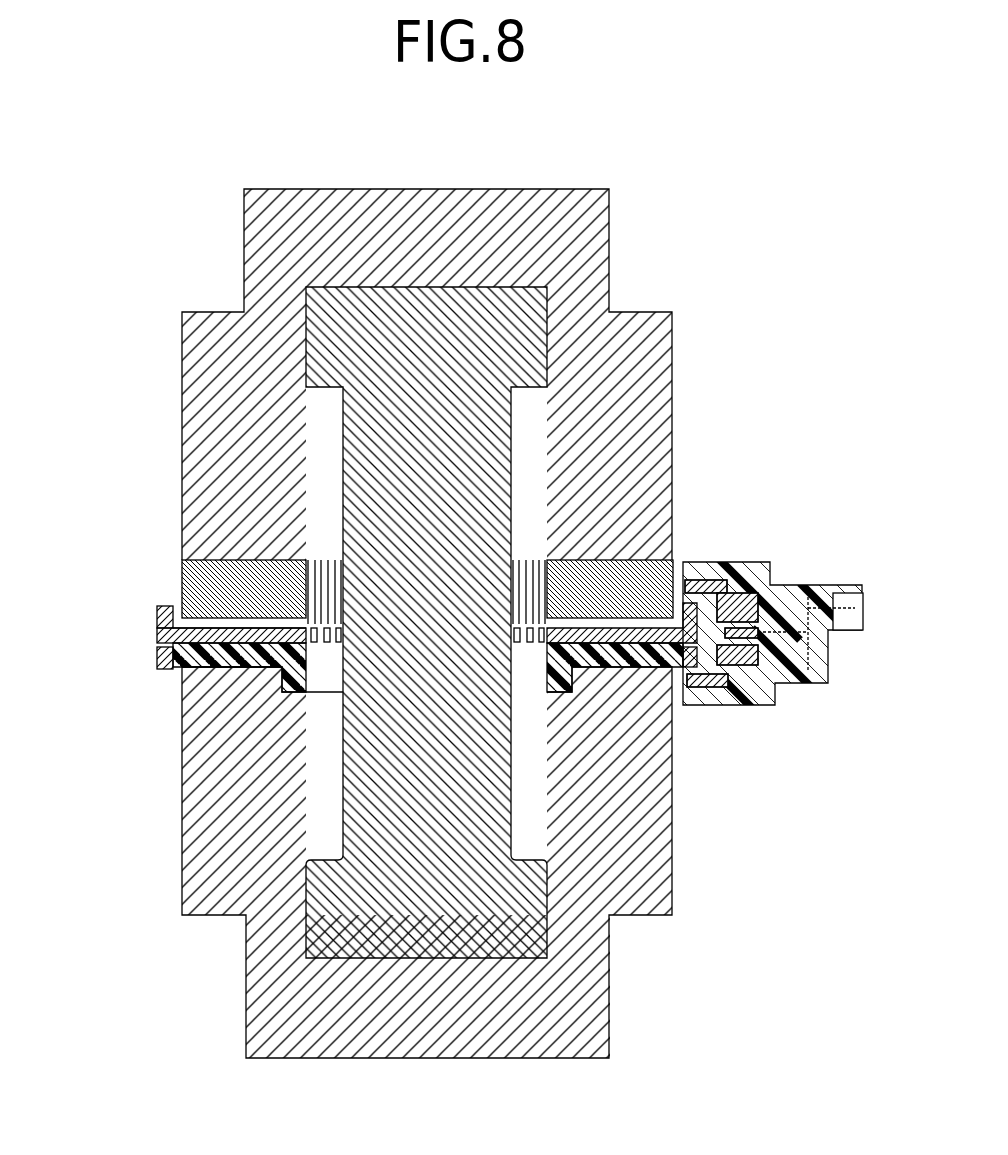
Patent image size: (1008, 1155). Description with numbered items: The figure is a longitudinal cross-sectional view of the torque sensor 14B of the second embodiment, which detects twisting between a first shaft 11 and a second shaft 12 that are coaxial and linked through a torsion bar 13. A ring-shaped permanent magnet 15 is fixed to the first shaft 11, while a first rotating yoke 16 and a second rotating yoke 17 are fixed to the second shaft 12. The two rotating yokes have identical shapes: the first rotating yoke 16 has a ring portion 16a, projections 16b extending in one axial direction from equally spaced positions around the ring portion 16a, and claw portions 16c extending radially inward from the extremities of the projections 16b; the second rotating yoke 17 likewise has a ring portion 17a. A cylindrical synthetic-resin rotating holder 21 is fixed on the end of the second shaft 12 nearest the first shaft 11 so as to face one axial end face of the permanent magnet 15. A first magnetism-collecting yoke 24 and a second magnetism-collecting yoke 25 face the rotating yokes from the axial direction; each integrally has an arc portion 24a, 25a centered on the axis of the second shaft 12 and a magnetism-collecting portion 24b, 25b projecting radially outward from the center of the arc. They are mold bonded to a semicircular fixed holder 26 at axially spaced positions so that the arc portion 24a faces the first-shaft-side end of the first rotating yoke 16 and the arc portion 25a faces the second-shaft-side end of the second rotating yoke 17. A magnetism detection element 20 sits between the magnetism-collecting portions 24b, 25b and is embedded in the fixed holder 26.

The first shaft 11 is at (520, 197).
The second shaft 12 is at (470, 1048).
The torsion bar 13 is at (495, 820).
The torque sensor 14B is at (367, 624).
The permanent magnet 15 is at (620, 558).
The first rotating yoke 16 is at (374, 560).
The ring portion 16a is at (166, 606).
The projection 16b is at (157, 627).
The claw portion 16c is at (257, 630).
The second rotating yoke 17 is at (381, 703).
The ring portion 17a is at (157, 662).
The magnetism detection element 20 is at (776, 643).
The rotating holder 21 is at (250, 665).
The first magnetism-collecting yoke 24 is at (756, 568).
The arc portion 24a is at (703, 578).
The magnetism-collecting portion 24b is at (775, 595).
The second magnetism-collecting yoke 25 is at (717, 744).
The arc portion 25a is at (698, 688).
The magnetism-collecting portion 25b is at (765, 695).
The fixed holder 26 is at (798, 595).